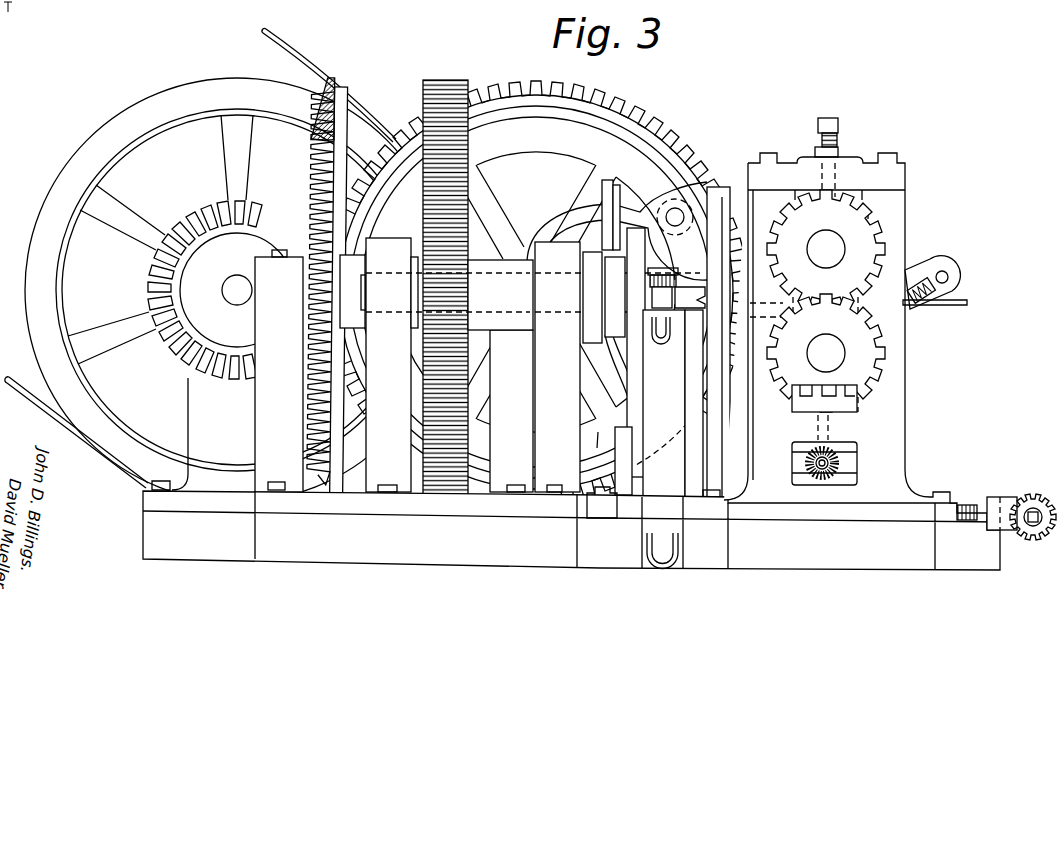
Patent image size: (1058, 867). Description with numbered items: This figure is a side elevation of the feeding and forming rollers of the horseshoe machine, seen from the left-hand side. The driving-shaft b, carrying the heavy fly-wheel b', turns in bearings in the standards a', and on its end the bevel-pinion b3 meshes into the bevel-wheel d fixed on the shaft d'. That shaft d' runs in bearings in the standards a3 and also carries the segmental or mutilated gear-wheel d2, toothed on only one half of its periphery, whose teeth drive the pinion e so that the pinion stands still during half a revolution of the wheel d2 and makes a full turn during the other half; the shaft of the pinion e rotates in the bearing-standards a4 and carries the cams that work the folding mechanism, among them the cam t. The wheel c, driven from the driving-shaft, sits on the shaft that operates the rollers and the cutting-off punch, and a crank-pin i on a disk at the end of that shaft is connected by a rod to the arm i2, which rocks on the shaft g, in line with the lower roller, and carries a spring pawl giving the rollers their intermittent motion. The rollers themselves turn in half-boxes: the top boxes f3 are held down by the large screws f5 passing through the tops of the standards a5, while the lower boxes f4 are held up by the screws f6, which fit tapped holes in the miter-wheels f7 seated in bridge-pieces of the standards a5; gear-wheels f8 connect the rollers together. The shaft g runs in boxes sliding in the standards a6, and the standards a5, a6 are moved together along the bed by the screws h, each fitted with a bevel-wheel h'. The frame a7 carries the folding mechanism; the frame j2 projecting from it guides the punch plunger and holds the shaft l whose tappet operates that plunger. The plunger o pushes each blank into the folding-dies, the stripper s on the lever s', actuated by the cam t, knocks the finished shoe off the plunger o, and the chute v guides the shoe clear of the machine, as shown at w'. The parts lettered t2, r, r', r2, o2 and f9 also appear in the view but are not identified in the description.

The fly-wheel b' is at (237, 290).
The bevel-pinion b3 is at (221, 290).
The driving-shaft b is at (237, 290).
The standards a' is at (185, 434).
The standards a3 is at (394, 371).
The bearing-standards a4 is at (473, 365).
The standards a5 is at (840, 328).
The standards a6 is at (694, 403).
The frame a7 is at (602, 502).
The bevel-wheel d is at (326, 291).
The shaft d' is at (353, 291).
The segmental gear-wheel d2 is at (445, 293).
The pinion e is at (445, 295).
The wheel c is at (543, 291).
The cam t is at (592, 297).
The lever t2 is at (617, 231).
The stripper s is at (663, 269).
The lever s' is at (608, 215).
The lever r is at (619, 405).
The lever end r' is at (623, 461).
The slide r2 is at (615, 297).
The shaft l is at (601, 440).
The plunger o is at (662, 297).
The pawl o2 is at (690, 297).
The chute v is at (668, 439).
The discharged shoe w' is at (662, 542).
The crank-pin i is at (675, 217).
The arm i2 is at (938, 282).
The frame j2 is at (716, 342).
The top half-boxes f3 is at (826, 249).
The lower half-boxes f4 is at (864, 388).
The screws f5 is at (838, 142).
The screws f6 is at (824, 406).
The miter-wheels f7 is at (840, 455).
The gear-wheels f8 is at (862, 252).
The gear wheel f9 is at (826, 353).
The shaft g is at (830, 468).
The screws h is at (967, 502).
The bevel-wheel h' is at (1021, 503).